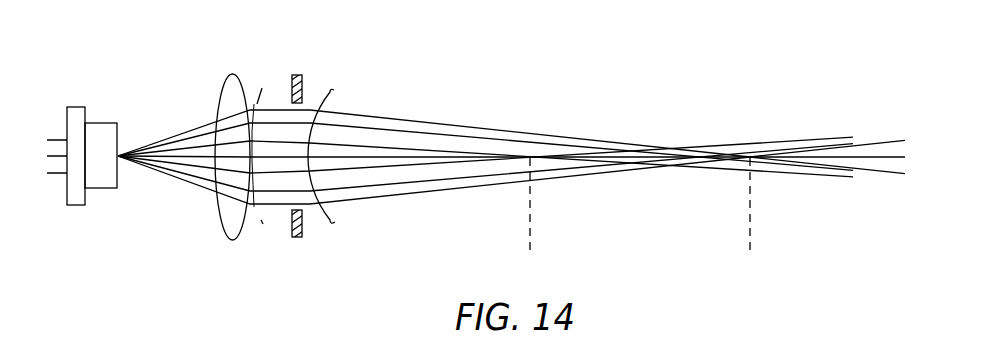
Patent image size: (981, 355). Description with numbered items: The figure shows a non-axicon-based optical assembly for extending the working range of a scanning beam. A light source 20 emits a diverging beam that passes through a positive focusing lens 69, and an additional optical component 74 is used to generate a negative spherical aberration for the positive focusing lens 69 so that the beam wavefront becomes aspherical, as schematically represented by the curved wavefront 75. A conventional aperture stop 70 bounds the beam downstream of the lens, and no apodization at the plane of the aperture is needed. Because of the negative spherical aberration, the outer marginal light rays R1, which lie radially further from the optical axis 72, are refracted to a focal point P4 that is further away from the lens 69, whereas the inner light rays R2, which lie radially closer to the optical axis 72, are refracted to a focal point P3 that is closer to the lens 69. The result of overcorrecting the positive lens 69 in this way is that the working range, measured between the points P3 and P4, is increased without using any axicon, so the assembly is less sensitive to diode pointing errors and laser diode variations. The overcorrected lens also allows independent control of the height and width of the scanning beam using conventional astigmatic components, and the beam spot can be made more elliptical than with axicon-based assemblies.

The light source 20 is at (107, 122).
The positive focusing lens 69 is at (227, 93).
The aperture 70 is at (303, 85).
The additional optical component 74 is at (258, 212).
The aspherical beam wavefront 75 is at (330, 221).
The optical axis 72 is at (885, 158).
The outer marginal light rays R1 is at (430, 120).
The inner light rays R2 is at (458, 151).
The focal point P3 is at (532, 218).
The focal point P4 is at (752, 218).